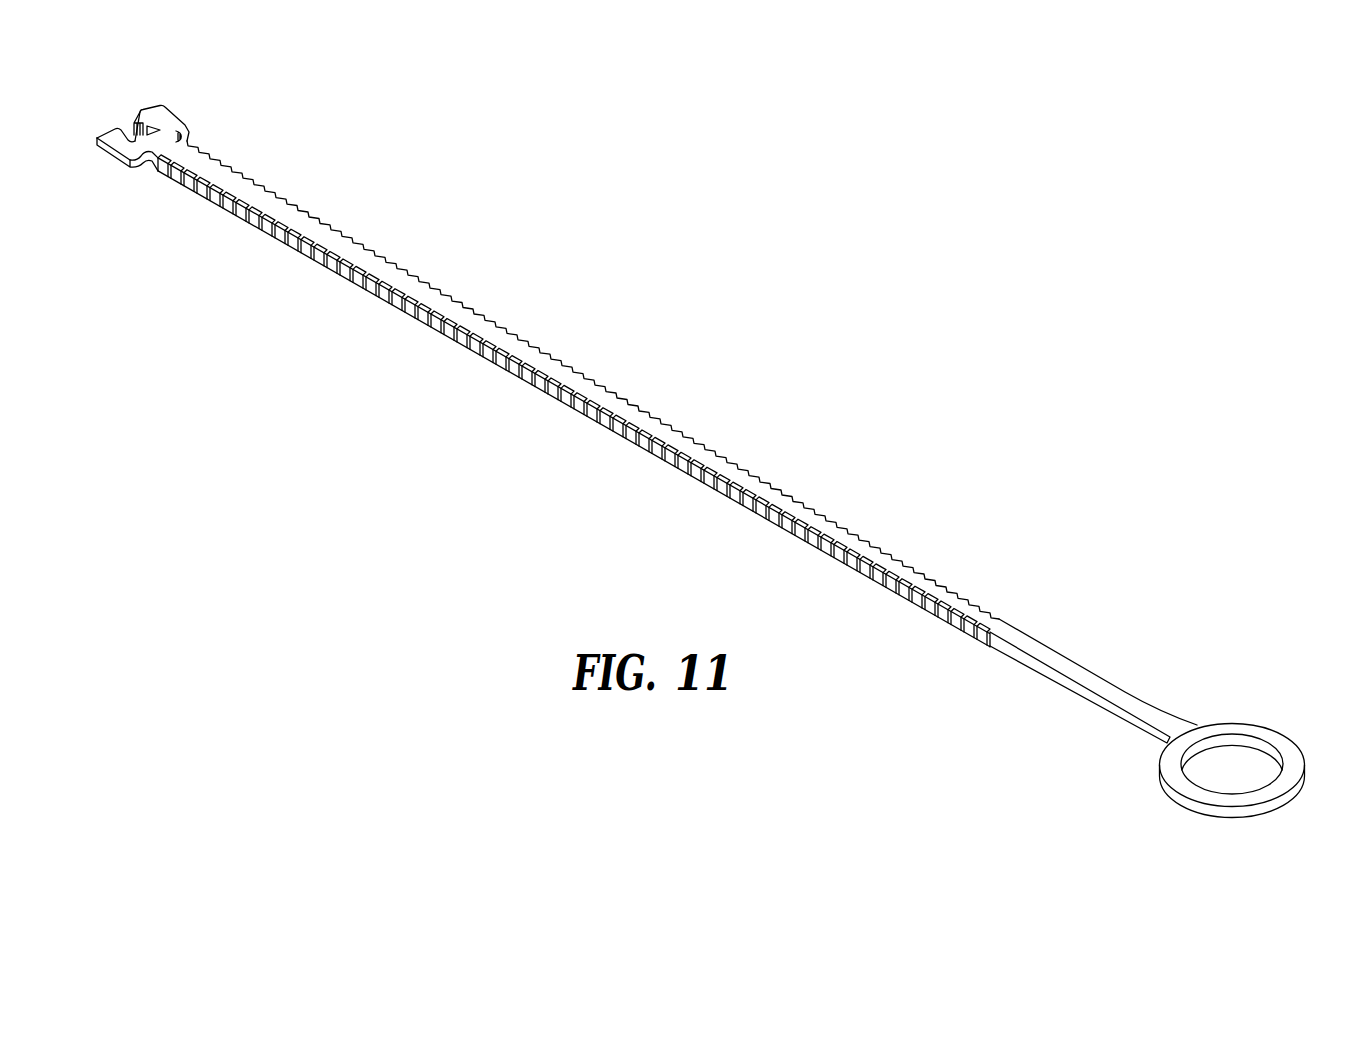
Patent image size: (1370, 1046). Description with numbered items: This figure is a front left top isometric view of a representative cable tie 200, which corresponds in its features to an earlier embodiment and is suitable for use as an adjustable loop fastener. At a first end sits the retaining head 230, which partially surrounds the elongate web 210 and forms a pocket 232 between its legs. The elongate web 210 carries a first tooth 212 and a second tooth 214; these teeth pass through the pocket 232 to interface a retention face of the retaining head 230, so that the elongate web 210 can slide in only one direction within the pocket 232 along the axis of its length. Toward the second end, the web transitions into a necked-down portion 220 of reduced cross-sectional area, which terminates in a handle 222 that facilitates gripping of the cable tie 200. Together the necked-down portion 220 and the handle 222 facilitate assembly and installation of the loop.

The cable tie 200 is at (805, 302).
The elongate web 210 is at (545, 362).
The first tooth 212 is at (693, 438).
The second tooth 214 is at (679, 465).
The necked-down portion 220 is at (1092, 680).
The handle 222 is at (1287, 744).
The retaining head 230 is at (167, 125).
The pocket 232 is at (134, 137).